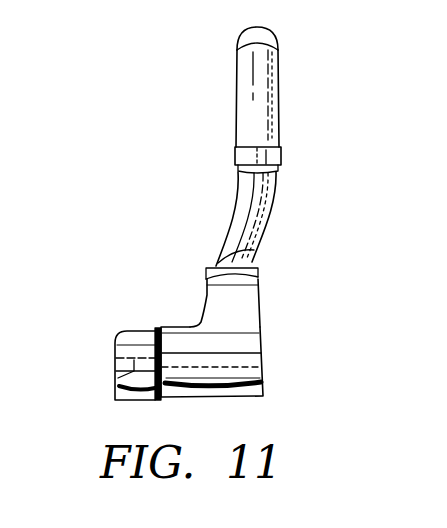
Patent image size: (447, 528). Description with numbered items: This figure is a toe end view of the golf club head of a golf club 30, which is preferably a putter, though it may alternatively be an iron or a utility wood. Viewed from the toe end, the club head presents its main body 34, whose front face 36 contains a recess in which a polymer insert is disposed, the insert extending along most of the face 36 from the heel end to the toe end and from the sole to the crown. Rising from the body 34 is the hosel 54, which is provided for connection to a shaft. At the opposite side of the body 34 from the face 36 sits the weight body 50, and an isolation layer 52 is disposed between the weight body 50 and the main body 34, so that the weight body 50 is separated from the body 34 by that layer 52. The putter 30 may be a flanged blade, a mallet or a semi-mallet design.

The golf club 30 is at (154, 208).
The main body 34 is at (200, 316).
The front face 36 is at (264, 333).
The weight body 50 is at (117, 333).
The isolation layer 52 is at (158, 329).
The hosel 54 is at (272, 213).